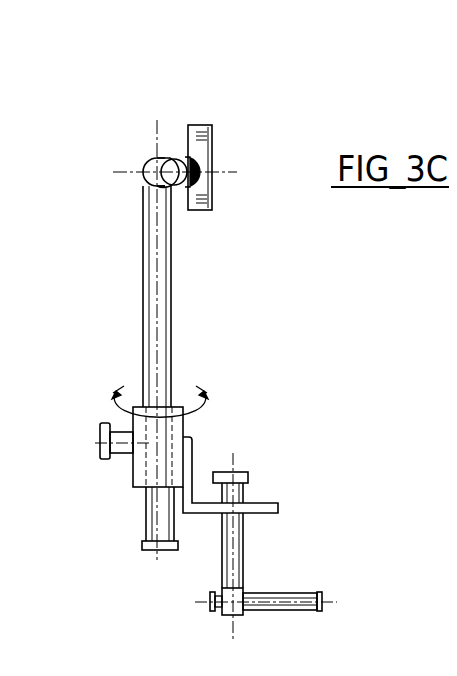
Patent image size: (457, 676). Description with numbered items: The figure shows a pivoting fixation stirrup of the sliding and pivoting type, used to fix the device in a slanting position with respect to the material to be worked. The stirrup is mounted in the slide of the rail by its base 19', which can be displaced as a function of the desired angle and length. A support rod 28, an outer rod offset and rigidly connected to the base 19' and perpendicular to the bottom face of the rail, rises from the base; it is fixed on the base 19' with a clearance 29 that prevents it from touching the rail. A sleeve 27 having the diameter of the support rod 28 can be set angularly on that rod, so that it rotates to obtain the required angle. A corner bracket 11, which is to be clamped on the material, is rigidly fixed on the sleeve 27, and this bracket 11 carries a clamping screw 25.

The clearance 29 is at (167, 157).
The base 19' is at (244, 160).
The support rod 28 is at (172, 305).
The sleeve 27 is at (133, 476).
The corner bracket 11 is at (280, 508).
The clamping screw 25 is at (245, 553).